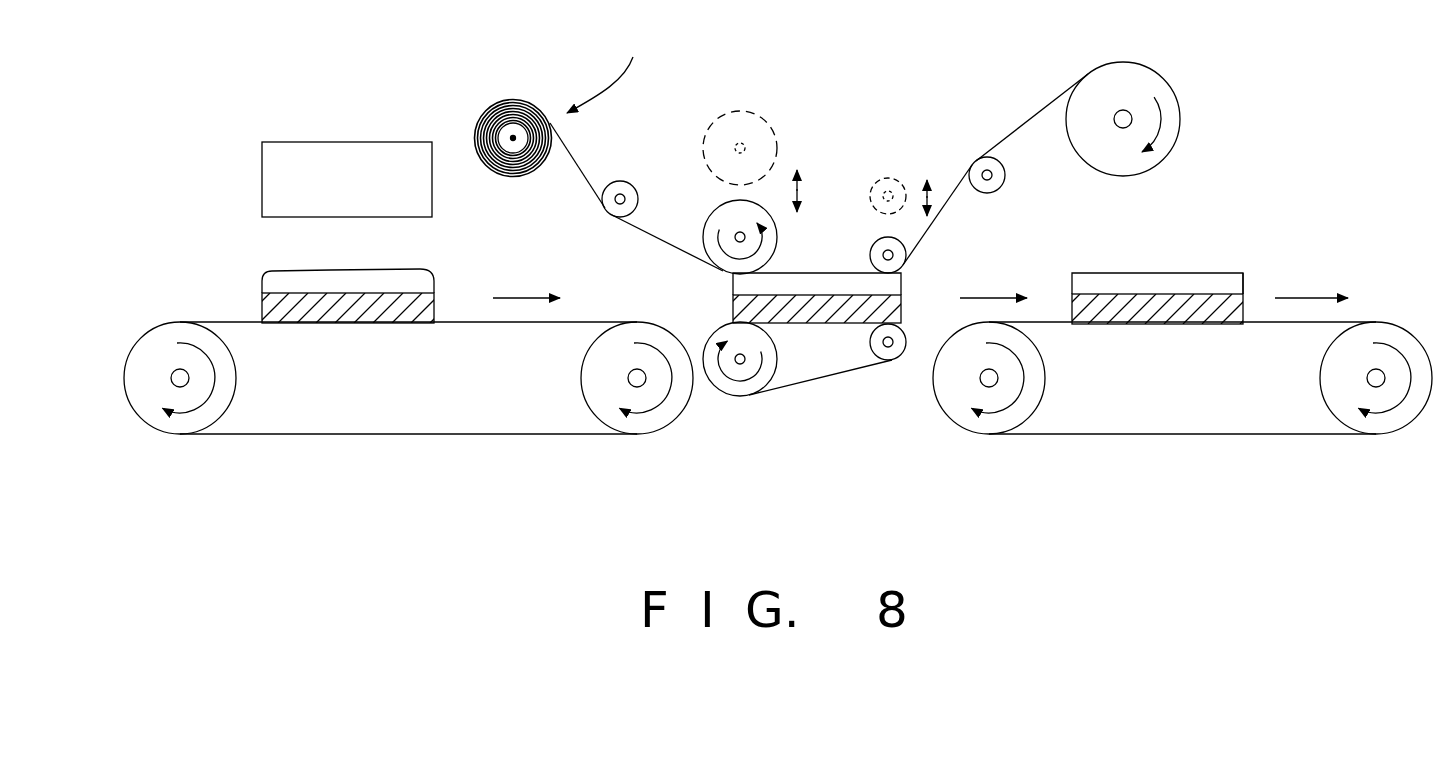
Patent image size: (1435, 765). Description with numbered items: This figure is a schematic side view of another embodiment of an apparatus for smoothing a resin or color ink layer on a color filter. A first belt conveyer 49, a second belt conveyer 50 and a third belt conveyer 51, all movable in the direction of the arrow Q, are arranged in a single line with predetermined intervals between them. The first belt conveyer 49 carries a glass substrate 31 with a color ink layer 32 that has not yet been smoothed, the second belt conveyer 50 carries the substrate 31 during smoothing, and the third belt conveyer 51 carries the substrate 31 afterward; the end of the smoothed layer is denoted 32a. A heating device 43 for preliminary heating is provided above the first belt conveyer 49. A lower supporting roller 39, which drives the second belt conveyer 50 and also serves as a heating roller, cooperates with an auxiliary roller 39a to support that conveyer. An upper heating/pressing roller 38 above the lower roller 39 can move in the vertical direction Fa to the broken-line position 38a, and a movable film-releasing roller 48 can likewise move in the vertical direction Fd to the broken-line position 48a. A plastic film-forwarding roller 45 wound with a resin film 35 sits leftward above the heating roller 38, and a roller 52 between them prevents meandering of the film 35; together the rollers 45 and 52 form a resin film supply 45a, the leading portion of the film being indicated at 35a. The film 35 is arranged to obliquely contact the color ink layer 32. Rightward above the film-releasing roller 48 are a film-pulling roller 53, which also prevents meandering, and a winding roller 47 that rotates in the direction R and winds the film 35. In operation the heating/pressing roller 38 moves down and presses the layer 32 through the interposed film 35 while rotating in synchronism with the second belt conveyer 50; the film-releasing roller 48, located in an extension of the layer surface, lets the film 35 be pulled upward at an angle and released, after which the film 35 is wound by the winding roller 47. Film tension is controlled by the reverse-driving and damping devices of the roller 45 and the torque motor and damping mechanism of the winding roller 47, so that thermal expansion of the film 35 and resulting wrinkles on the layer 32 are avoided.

The pressing head 43 is at (338, 142).
The first belt conveyer 49 is at (222, 322).
The third belt conveyer 51 is at (1276, 323).
The color ink layer 32 is at (411, 272).
The glass substrate 31 is at (350, 305).
The end portion of layer 32a is at (1232, 272).
The direction of conveyer movement Q is at (518, 298).
The film-forwarding roller 45 is at (498, 133).
The leading end of film 35a is at (530, 100).
The resin film supply 45a is at (621, 69).
The meandering preventing roller 52 is at (622, 181).
The resin film 35 is at (655, 238).
The raised position of heating/pressing roller 38a is at (745, 108).
The upper heating/pressing roller 38 is at (716, 212).
The vertical direction of heating/pressing roller Fa is at (797, 190).
The raised position of film-releasing roller 48a is at (892, 177).
The film-releasing roller 48 is at (873, 243).
The vertical direction of film-releasing roller Fd is at (927, 196).
The film-pulling roller 53 is at (1000, 193).
The winding roller 47 is at (1150, 70).
The rotation direction R is at (1162, 118).
The lower supporting roller 39 is at (740, 397).
The auxiliary roller 39a is at (892, 361).
The second belt conveyer 50 is at (797, 385).